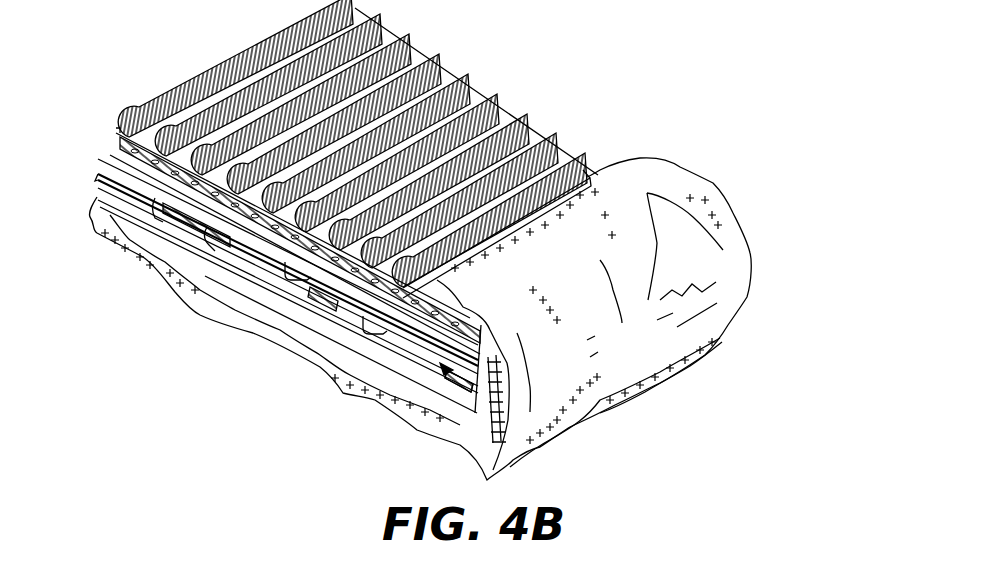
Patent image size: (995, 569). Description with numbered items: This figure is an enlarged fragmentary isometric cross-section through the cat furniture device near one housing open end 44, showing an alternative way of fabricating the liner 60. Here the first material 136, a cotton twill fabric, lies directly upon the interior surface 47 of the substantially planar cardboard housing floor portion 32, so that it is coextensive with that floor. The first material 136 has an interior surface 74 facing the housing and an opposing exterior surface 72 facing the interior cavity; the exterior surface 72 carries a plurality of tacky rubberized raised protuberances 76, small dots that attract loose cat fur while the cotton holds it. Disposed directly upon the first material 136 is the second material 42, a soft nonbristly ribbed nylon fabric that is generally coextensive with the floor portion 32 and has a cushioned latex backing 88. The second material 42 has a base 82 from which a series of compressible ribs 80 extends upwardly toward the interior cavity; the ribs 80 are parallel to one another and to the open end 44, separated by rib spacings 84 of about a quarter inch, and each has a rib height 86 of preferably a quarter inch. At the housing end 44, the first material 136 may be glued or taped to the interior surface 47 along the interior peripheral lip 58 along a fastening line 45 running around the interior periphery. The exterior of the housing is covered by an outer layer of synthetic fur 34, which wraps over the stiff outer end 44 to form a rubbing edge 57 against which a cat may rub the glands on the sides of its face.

The ribs 80 is at (420, 72).
The second material 42 is at (490, 114).
The liner 60 is at (548, 152).
The rubbing edge 57 is at (705, 180).
The base 82 is at (118, 133).
The cushioned latex backing 88 is at (118, 152).
The interior surface 74 is at (195, 162).
The exterior surface 72 is at (215, 182).
The rib height 86 is at (230, 207).
The rib spacings 84 is at (252, 226).
The first material 136 is at (272, 240).
The rubberized raised protuberances 76 is at (302, 253).
The interior surface 47 is at (355, 328).
The fastening line 45 is at (395, 320).
The housing floor portion 32 is at (437, 344).
The interior peripheral lip 58 is at (470, 350).
The housing open end 44 is at (457, 396).
The synthetic fur 34 is at (620, 412).